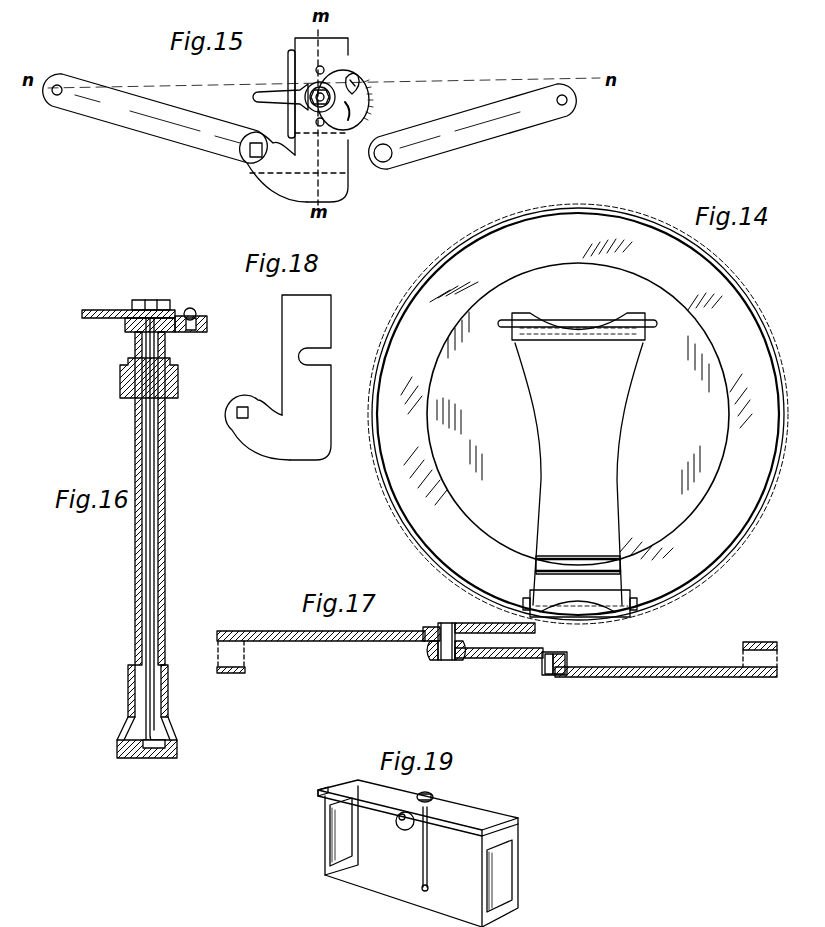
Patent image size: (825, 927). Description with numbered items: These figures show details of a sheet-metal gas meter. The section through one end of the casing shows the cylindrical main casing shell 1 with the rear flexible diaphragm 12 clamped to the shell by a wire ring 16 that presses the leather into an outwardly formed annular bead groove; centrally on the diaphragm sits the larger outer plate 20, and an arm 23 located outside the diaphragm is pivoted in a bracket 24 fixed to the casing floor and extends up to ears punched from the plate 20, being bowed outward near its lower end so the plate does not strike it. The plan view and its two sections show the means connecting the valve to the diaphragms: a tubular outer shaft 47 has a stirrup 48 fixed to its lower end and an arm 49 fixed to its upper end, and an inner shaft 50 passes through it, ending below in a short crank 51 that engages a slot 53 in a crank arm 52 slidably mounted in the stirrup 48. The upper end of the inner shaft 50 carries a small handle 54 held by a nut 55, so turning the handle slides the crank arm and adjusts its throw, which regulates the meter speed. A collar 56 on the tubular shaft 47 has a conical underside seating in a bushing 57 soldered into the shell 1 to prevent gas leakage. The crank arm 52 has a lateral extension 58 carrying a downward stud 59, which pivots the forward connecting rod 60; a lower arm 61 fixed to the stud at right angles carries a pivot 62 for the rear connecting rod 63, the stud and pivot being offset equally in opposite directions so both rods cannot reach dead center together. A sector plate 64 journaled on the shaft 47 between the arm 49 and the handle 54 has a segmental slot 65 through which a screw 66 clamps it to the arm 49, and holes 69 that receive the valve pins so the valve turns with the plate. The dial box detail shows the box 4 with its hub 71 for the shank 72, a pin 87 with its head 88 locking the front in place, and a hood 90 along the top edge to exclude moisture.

In FIG. 14, the main casing shell 1 is at (775, 522).
In FIG. 19, the dial box 4 is at (480, 812).
In FIG. 14, the diaphragm 12 is at (742, 340).
In FIG. 14, the wire ring 16 is at (770, 410).
In FIG. 14, the outer plate 20 is at (576, 402).
In FIG. 14, the arm 23 is at (655, 432).
In FIG. 14, the bracket 24 is at (578, 620).
In FIG. 16, the tubular outer shaft 47 is at (166, 530).
In FIG. 15, the stirrup 48 is at (290, 60).
In FIG. 16, the stirrup 48 is at (128, 690).
In FIG. 15, the arm 49 is at (365, 84).
In FIG. 16, the arm 49 is at (200, 332).
In FIG. 16, the inner shaft 50 is at (152, 565).
In FIG. 16, the crank 51 is at (172, 727).
In FIG. 15, the crank arm 52 is at (335, 152).
In FIG. 16, the crank arm 52 is at (140, 758).
In FIG. 18, the crank arm 52 is at (306, 377).
In FIG. 17, the crank arm 52 is at (475, 623).
In FIG. 16, the slot 53 is at (160, 750).
In FIG. 18, the slot 53 is at (320, 360).
In FIG. 15, the handle 54 is at (268, 92).
In FIG. 16, the handle 54 is at (92, 318).
In FIG. 15, the nut 55 is at (348, 78).
In FIG. 16, the nut 55 is at (140, 300).
In FIG. 16, the collar 56 is at (120, 375).
In FIG. 16, the bushing 57 is at (178, 390).
In FIG. 15, the lateral extension 58 is at (285, 182).
In FIG. 18, the lateral extension 58 is at (258, 448).
In FIG. 17, the lateral extension 58 is at (430, 627).
In FIG. 15, the stud 59 is at (255, 152).
In FIG. 17, the stud 59 is at (432, 645).
In FIG. 15, the connecting rod 60 is at (155, 127).
In FIG. 17, the connecting rod 60 is at (356, 641).
In FIG. 17, the lower arm 61 is at (500, 658).
In FIG. 15, the pivot 62 is at (388, 160).
In FIG. 17, the pivot 62 is at (550, 675).
In FIG. 15, the connecting rod 63 is at (486, 138).
In FIG. 17, the connecting rod 63 is at (648, 667).
In FIG. 15, the sector plate 64 is at (370, 97).
In FIG. 15, the segmental slot 65 is at (335, 85).
In FIG. 15, the screw 66 is at (362, 82).
In FIG. 16, the screw 66 is at (193, 312).
In FIG. 15, the holes 69 is at (323, 66).
In FIG. 19, the hub 71 is at (411, 829).
In FIG. 19, the shank 72 is at (399, 822).
In FIG. 19, the pin 87 is at (428, 855).
In FIG. 19, the head 88 is at (433, 796).
In FIG. 19, the hood 90 is at (330, 789).